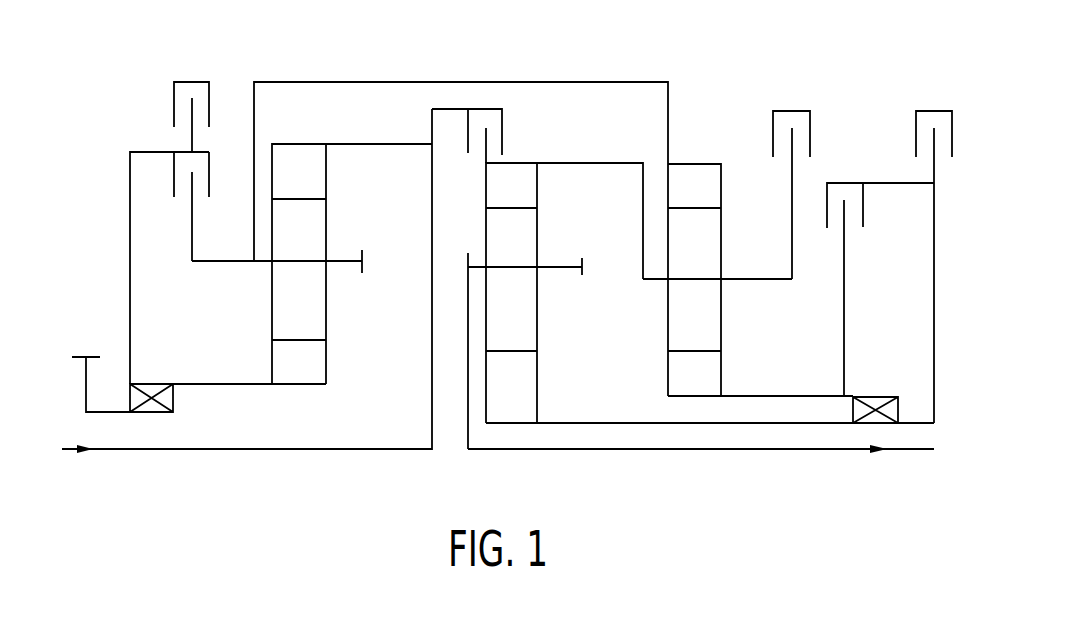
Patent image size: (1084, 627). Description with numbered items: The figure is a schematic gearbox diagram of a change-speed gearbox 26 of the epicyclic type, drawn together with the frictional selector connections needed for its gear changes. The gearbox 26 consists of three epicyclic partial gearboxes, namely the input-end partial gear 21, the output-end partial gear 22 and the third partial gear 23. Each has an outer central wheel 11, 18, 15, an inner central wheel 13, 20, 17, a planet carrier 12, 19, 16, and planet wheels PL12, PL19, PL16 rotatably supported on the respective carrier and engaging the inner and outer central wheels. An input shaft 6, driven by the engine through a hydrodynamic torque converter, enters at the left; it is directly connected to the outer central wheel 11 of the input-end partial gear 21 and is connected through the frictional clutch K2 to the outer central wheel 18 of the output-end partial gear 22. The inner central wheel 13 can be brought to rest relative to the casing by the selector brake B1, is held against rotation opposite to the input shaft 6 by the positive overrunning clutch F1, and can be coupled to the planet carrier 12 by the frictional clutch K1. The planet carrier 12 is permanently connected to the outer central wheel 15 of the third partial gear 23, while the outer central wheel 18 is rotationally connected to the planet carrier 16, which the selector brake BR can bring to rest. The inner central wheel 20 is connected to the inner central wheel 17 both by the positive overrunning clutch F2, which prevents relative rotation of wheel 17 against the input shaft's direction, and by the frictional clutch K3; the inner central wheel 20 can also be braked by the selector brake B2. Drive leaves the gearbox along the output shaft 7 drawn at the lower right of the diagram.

The change-speed gearbox 26 is at (668, 40).
The input shaft 6 is at (215, 452).
The output shaft 7 is at (670, 457).
The outer central wheel 11 is at (299, 181).
The planet carrier 12 is at (277, 243).
The inner central wheel 13 is at (299, 359).
The outer central wheel 15 is at (694, 191).
The planet carrier 16 is at (717, 263).
The inner central wheel 17 is at (694, 371).
The outer central wheel 18 is at (511, 190).
The planet carrier 19 is at (525, 248).
The inner central wheel 20 is at (511, 375).
The input-end partial gear 21 is at (327, 400).
The output-end partial gear 22 is at (498, 434).
The third partial gear 23 is at (720, 410).
The frictional selector brake B1 is at (191, 97).
The frictional selector brake B2 is at (934, 250).
The frictional selector brake BR is at (791, 178).
The frictional clutch K1 is at (169, 250).
The frictional clutch K2 is at (483, 136).
The frictional clutch K3 is at (880, 290).
The positive overrunning clutch F1 is at (122, 380).
The positive overrunning clutch F2 is at (875, 395).
The planet wheels PL12 is at (300, 285).
The planet wheels PL16 is at (692, 300).
The planet wheels PL19 is at (505, 295).